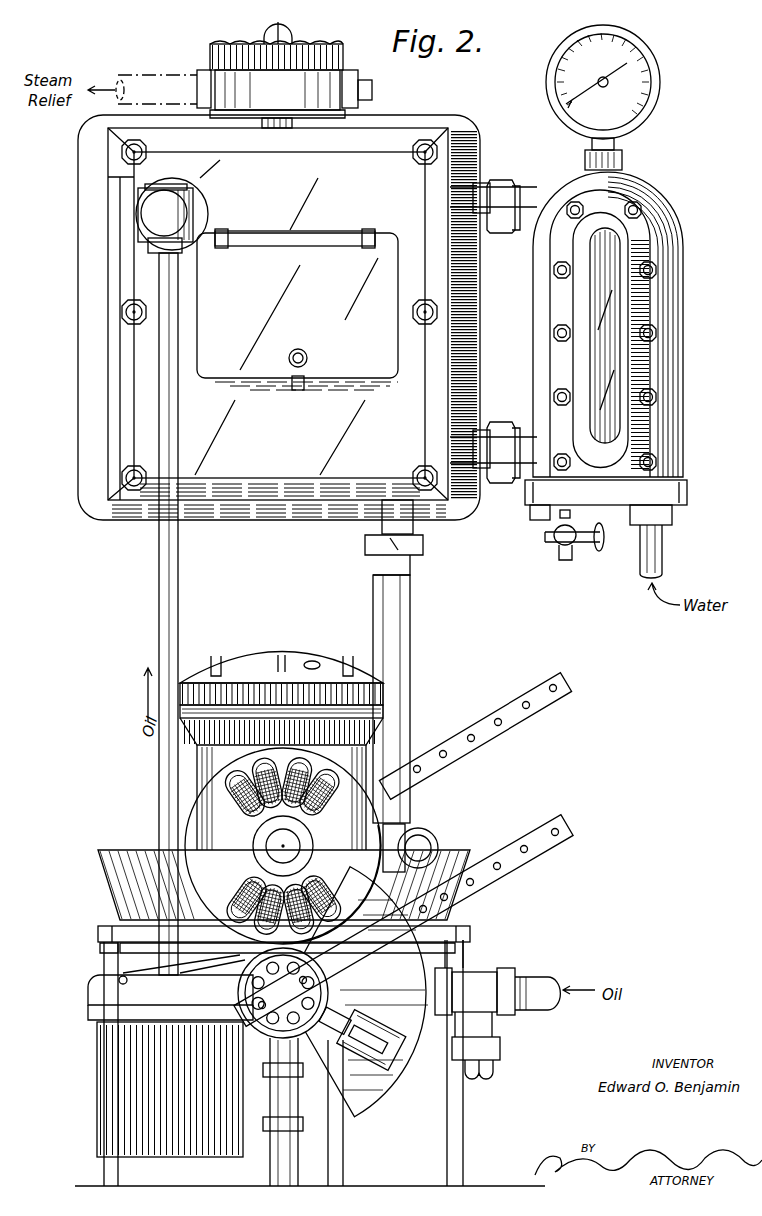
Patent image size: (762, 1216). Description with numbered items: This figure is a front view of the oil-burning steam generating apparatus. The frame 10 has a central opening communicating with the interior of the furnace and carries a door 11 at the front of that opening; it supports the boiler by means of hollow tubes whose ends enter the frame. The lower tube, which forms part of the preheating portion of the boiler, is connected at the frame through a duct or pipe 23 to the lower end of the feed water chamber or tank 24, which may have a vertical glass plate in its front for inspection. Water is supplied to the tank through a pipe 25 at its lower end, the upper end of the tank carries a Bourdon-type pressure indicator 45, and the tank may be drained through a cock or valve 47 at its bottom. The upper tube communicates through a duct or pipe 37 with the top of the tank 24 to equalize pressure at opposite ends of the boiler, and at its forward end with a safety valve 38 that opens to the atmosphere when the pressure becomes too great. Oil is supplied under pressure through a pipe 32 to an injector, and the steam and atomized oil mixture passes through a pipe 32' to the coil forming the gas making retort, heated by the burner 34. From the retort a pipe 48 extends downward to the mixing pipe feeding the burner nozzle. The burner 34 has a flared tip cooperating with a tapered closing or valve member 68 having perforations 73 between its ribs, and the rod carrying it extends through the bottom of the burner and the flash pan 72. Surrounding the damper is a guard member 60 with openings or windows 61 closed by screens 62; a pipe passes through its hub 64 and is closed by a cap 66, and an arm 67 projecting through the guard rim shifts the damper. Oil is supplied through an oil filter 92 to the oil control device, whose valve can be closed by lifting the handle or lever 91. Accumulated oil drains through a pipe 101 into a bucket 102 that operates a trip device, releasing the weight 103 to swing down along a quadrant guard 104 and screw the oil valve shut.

The frame 10 is at (64, 189).
The door 11 is at (297, 309).
The duct or pipe 23 is at (462, 440).
The feed water chamber or tank 24 is at (700, 214).
The pipe 25 is at (652, 552).
The pipe 32 is at (143, 614).
The pipe 32' is at (125, 215).
The burner 34 is at (281, 715).
The duct or pipe 37 is at (465, 200).
The safety valve 38 is at (200, 53).
The pressure indicator 45 is at (655, 52).
The cock or valve 47 is at (560, 556).
The pipe 48 is at (398, 652).
The guard member 60 is at (283, 846).
The openings or windows 61 is at (252, 798).
The screens 62 is at (312, 795).
The hub 64 is at (262, 860).
The cap 66 is at (290, 850).
The arm 67 is at (518, 716).
The closing or valve member 68 is at (240, 668).
The flash pan 72 is at (105, 880).
The perforations 73 is at (312, 660).
The handle or lever 91 is at (545, 838).
The oil filter 92 is at (480, 970).
The pipe 101 is at (238, 965).
The bucket 102 is at (170, 1089).
The weight 103 is at (373, 1015).
The quadrant guard 104 is at (393, 1082).